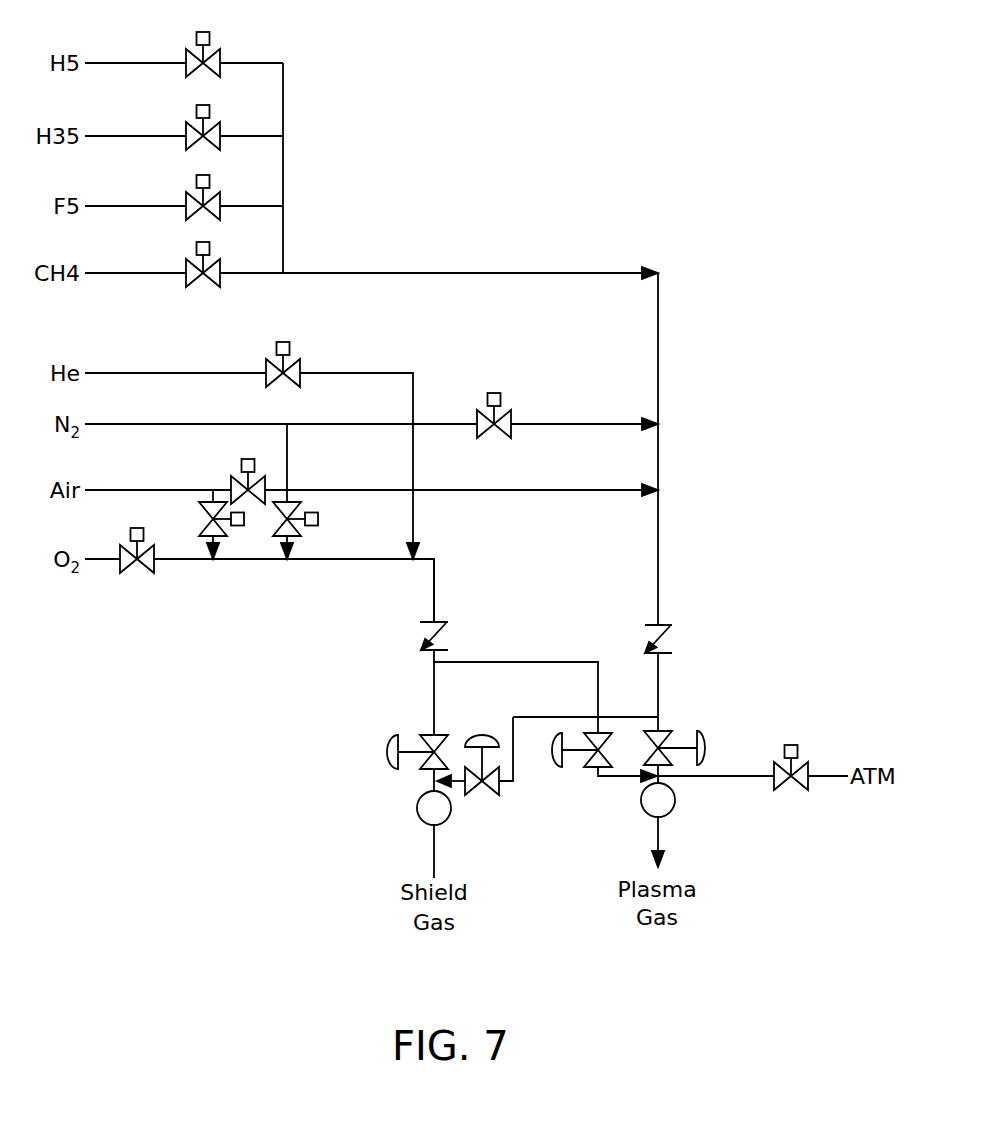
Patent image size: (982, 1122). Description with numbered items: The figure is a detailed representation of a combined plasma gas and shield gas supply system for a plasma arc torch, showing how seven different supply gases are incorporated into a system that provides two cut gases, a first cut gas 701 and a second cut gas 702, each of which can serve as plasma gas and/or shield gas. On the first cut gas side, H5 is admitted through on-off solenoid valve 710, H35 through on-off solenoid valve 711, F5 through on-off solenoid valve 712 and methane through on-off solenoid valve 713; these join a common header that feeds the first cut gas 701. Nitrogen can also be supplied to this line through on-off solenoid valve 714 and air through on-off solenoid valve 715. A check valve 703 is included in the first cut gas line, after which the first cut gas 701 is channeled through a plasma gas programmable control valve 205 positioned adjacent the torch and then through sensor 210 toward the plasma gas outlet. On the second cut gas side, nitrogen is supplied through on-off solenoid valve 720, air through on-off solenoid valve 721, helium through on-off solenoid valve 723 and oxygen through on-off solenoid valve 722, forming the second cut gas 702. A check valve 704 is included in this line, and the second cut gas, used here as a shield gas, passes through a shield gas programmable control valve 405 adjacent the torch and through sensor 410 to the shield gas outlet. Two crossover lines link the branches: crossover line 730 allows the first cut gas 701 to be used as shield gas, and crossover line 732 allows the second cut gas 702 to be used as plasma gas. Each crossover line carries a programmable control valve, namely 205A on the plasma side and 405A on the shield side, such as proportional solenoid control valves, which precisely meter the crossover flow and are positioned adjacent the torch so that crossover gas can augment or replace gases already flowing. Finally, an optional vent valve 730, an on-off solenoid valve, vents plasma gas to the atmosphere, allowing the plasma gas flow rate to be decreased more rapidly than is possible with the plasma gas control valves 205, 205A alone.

The on-off solenoid valve 710 is at (210, 33).
The on-off solenoid valve 711 is at (210, 106).
The on-off solenoid valve 712 is at (210, 175).
The on-off solenoid valve 713 is at (210, 243).
The on-off solenoid valve 723 is at (289, 343).
The on-off solenoid valve 714 is at (501, 394).
The on-off solenoid valve 715 is at (240, 458).
The on-off solenoid valve 721 is at (200, 505).
The on-off solenoid valve 720 is at (318, 515).
The on-off solenoid valve 722 is at (131, 527).
The second cut gas 702 is at (437, 572).
The check valve 704 is at (417, 633).
The first cut gas 701 is at (660, 573).
The check valve 703 is at (672, 638).
The crossover line 732 is at (547, 660).
The crossover line / vent valve 730 is at (533, 715).
The shield gas programmable control valve 405 is at (387, 747).
The programmable control valve 405A is at (493, 790).
The sensor 410 is at (417, 808).
The programmable control valve 205A is at (570, 757).
The plasma gas programmable control valve 205 is at (700, 733).
The sensor 210 is at (672, 813).